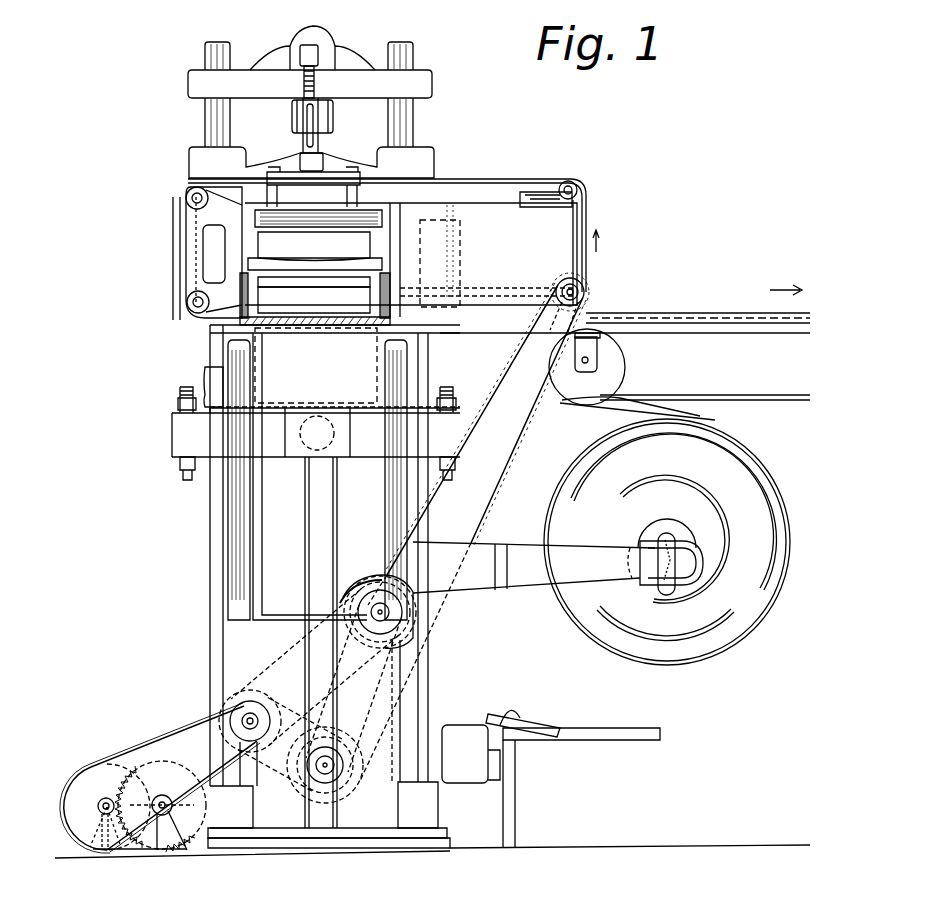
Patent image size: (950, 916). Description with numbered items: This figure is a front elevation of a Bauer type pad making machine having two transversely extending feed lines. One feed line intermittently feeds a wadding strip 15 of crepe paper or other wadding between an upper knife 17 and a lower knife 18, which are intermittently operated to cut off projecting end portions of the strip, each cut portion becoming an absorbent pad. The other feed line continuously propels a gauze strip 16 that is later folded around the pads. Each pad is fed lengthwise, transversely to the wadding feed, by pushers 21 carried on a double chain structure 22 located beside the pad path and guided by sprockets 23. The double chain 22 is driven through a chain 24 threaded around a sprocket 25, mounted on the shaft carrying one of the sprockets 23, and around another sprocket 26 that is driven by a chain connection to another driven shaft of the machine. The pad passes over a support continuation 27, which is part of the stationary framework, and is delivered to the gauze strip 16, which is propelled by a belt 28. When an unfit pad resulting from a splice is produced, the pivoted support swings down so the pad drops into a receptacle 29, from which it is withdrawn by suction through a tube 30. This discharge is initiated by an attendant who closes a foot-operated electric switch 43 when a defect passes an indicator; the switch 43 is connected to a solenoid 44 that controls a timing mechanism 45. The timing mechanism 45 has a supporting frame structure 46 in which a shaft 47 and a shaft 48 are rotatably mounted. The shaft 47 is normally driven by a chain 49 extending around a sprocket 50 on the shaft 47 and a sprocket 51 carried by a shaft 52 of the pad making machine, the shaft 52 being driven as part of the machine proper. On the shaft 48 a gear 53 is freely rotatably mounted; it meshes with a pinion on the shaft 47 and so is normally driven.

The wadding strip 15 is at (300, 270).
The gauze strip 16 is at (607, 412).
The upper knife 17 is at (358, 262).
The lower knife 18 is at (315, 299).
The pushers 21 is at (325, 190).
The double chain structure 22 is at (480, 178).
The sprockets 23 is at (190, 180).
The chain 24 is at (535, 415).
The sprocket 25 is at (560, 285).
The sprocket 26 is at (350, 740).
The support continuation 27 is at (627, 362).
The belt 28 is at (690, 400).
The receptacle 29 is at (316, 586).
The tube 30 is at (205, 379).
The electric switch 43 is at (458, 725).
The solenoid 44 is at (667, 542).
The timing mechanism 45 is at (110, 750).
The supporting frame structure 46 is at (88, 857).
The shaft 47 is at (98, 806).
The shaft 48 is at (164, 796).
The chain 49 is at (165, 735).
The sprocket 50 is at (100, 778).
The sprocket 51 is at (215, 712).
The shaft 52 is at (262, 712).
The gear 53 is at (160, 762).